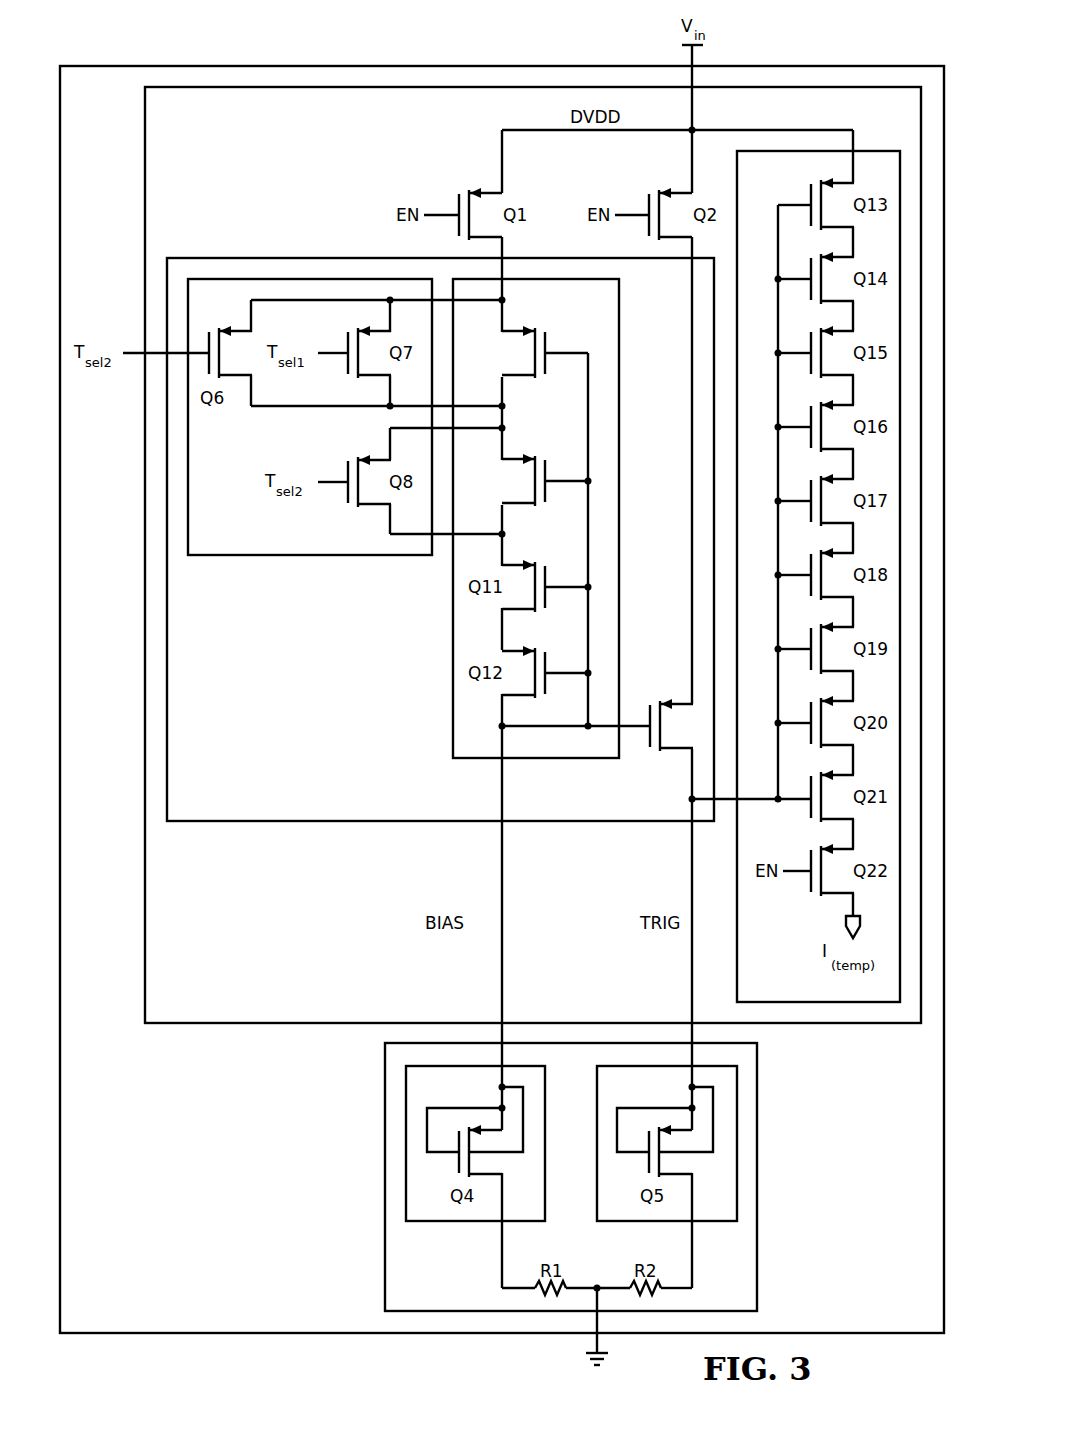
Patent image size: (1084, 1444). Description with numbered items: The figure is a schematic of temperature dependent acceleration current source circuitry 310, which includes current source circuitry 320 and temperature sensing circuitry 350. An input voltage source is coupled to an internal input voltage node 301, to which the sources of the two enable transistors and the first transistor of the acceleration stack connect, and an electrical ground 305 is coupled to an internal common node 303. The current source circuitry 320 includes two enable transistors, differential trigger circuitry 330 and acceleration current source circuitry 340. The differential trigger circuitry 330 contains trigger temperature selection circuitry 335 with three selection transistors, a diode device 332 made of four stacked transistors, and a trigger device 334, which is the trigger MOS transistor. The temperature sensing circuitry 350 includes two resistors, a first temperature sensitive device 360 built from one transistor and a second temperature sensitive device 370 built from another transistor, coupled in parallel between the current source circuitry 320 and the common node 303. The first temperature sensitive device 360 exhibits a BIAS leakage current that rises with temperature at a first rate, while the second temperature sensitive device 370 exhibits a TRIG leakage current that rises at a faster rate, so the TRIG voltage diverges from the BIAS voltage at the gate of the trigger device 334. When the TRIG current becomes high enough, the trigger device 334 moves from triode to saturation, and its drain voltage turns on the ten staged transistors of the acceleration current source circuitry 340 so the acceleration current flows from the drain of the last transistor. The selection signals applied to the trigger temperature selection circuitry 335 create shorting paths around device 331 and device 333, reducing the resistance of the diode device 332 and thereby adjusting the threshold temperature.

The temperature dependent acceleration current source circuitry 310 is at (303, 63).
The current source circuitry 320 is at (240, 135).
The differential trigger circuitry 330 is at (271, 256).
The device 331 is at (547, 344).
The diode device 332 is at (449, 632).
The device 333 is at (548, 468).
The trigger device 334 is at (648, 738).
The trigger temperature selection circuitry 335 is at (271, 560).
The acceleration current source circuitry 340 is at (798, 976).
The temperature sensing circuitry 350 is at (381, 1177).
The first temperature sensitive device 360 is at (463, 1223).
The second temperature sensitive device 370 is at (715, 1223).
The input voltage node 301 is at (689, 133).
The common node 303 is at (595, 1284).
The electrical ground 305 is at (592, 1358).